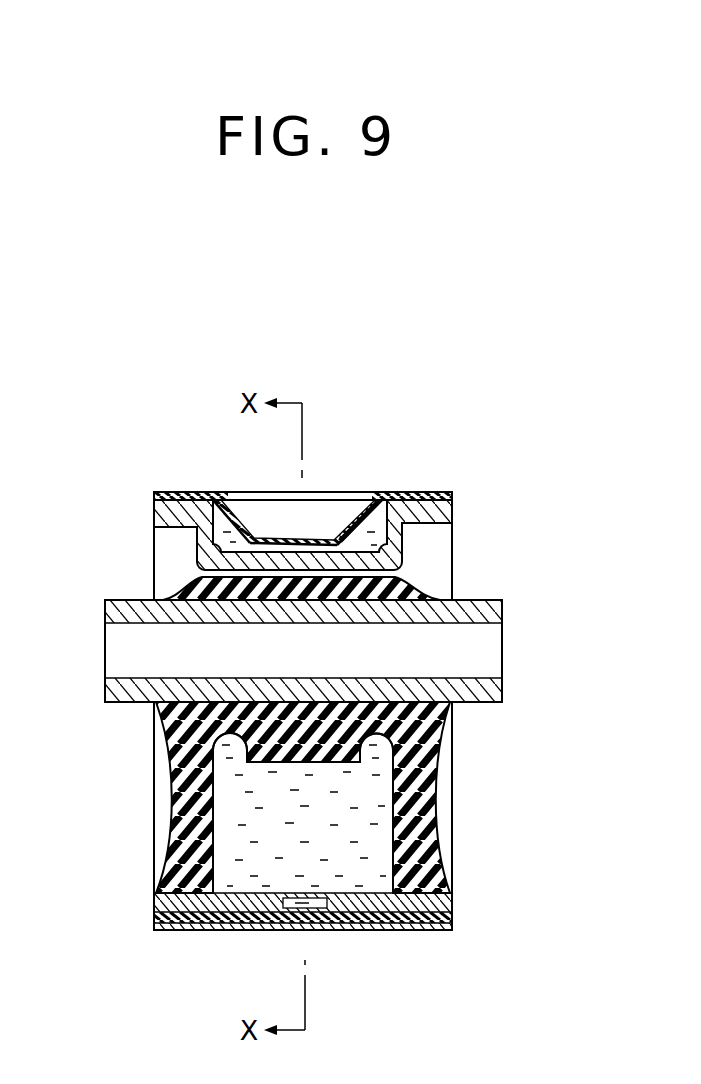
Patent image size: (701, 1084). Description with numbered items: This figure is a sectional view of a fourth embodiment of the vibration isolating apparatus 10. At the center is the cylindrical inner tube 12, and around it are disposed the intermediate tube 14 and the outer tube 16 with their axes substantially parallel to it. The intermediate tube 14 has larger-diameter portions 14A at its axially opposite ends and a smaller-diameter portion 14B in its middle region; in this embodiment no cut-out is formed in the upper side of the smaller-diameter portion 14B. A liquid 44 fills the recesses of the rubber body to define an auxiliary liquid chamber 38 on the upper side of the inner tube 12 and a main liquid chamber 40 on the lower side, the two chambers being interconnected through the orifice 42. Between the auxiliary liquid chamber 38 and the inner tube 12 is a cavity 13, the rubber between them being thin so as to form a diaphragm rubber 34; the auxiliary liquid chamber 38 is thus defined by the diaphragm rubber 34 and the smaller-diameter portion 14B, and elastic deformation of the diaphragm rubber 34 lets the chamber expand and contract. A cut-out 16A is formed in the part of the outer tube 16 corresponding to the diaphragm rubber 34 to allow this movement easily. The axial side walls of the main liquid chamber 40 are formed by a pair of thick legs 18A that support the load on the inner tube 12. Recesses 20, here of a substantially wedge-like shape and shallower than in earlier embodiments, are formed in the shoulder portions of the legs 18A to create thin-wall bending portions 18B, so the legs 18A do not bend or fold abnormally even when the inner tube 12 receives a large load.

The vibration isolating apparatus 10 is at (483, 381).
The inner tube 12 is at (491, 598).
The cavity 13 is at (165, 570).
The intermediate tube 14 is at (180, 540).
The larger-diameter portion 14A is at (451, 520).
The smaller-diameter portion 14B is at (398, 560).
The outer tube 16 is at (443, 491).
The cut-out 16A is at (233, 497).
The legs 18A is at (426, 788).
The thin-wall bending portions 18B is at (200, 720).
The recesses 20 is at (167, 733).
The diaphragm rubber 34 is at (310, 537).
The auxiliary liquid chamber 38 is at (245, 513).
The main liquid chamber 40 is at (337, 858).
The orifice 42 is at (282, 914).
The liquid 44 is at (357, 518).